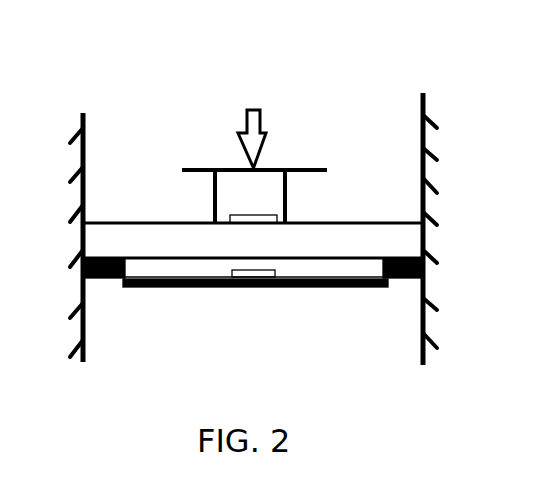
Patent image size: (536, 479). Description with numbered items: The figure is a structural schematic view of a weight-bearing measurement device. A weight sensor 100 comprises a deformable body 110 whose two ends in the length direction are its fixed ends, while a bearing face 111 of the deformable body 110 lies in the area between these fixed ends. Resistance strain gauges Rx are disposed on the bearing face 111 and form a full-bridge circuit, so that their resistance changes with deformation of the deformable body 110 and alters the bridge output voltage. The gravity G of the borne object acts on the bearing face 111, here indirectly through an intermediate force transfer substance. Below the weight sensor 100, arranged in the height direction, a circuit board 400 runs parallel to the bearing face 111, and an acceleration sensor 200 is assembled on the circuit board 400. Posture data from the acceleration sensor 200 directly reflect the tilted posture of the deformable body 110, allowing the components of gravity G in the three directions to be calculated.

The weight sensor 100 is at (122, 217).
The deformable body 110 is at (339, 239).
The bearing face 111 is at (323, 222).
The acceleration sensor 200 is at (250, 277).
The circuit board 400 is at (300, 281).
The resistance strain gauge Rx is at (240, 218).
The gravity G is at (254, 164).